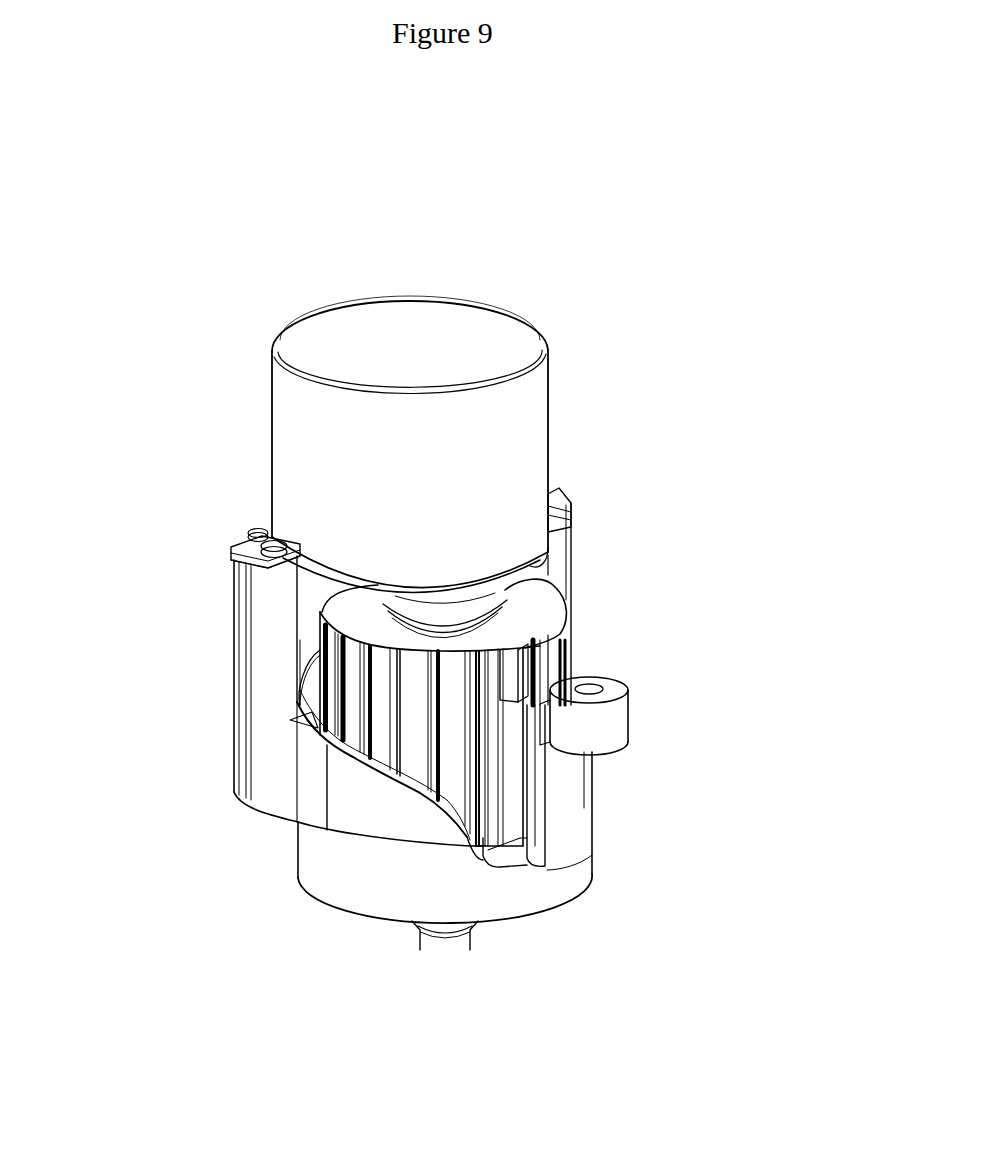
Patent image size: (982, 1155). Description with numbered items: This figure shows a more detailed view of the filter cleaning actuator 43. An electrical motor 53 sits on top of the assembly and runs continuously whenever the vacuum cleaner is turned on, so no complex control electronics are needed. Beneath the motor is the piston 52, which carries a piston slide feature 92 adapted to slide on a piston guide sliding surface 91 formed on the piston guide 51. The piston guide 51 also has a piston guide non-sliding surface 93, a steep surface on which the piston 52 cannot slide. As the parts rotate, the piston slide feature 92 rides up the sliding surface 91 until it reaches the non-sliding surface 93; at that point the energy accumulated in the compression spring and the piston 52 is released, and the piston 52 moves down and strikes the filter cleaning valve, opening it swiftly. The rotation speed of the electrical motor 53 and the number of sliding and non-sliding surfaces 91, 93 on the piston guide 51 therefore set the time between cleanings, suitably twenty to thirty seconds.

The filter cleaning actuator 43 is at (242, 450).
The piston guide 51 is at (549, 888).
The piston 52 is at (538, 613).
The electrical motor 53 is at (539, 424).
The piston guide sliding surface 91 is at (303, 700).
The piston slide feature 92 is at (530, 672).
The piston guide non-sliding surface 93 is at (530, 790).